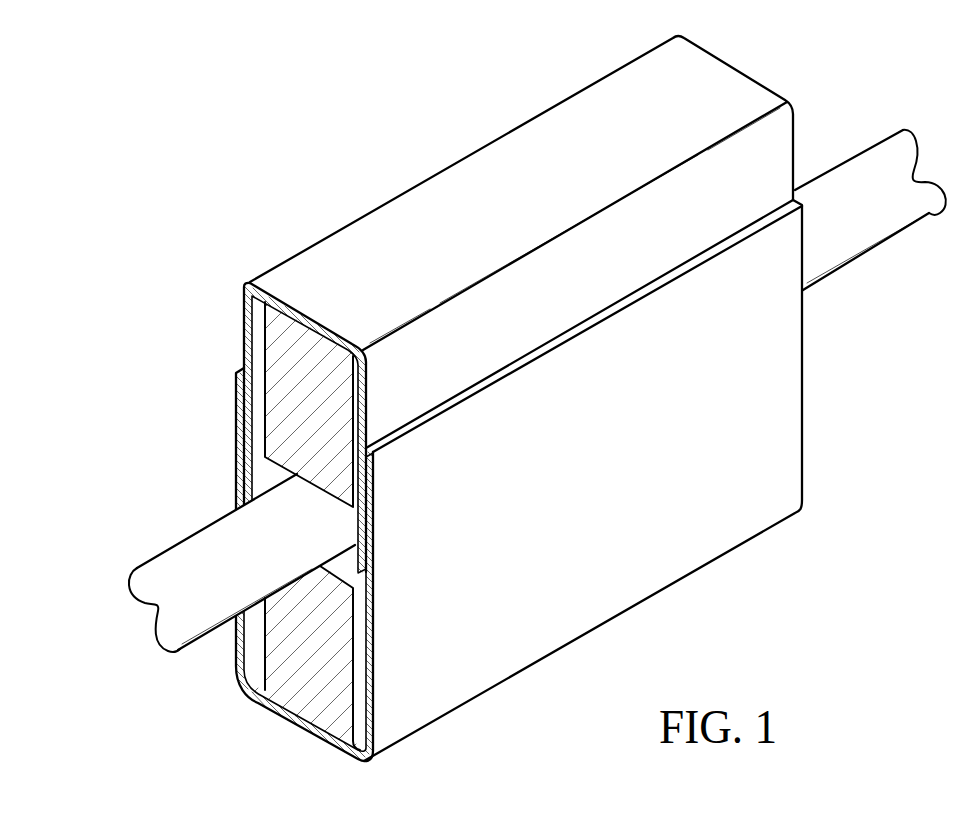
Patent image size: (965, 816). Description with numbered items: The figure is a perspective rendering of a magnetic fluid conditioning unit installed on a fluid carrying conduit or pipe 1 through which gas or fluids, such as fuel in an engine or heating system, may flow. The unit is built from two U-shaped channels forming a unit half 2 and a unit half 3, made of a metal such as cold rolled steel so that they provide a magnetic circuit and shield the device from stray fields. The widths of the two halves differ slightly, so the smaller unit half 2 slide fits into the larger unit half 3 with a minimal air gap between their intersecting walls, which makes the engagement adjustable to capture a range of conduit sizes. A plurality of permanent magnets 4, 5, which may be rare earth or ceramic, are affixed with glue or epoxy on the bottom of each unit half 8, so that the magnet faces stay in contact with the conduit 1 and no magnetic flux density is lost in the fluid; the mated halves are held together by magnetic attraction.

The conduit or pipe 1 is at (872, 250).
The unit half 2 is at (733, 68).
The unit half 3 is at (802, 438).
The permanent magnet 4 is at (287, 690).
The permanent magnet 5 is at (308, 358).
The bottom of each unit half 8 is at (283, 314).